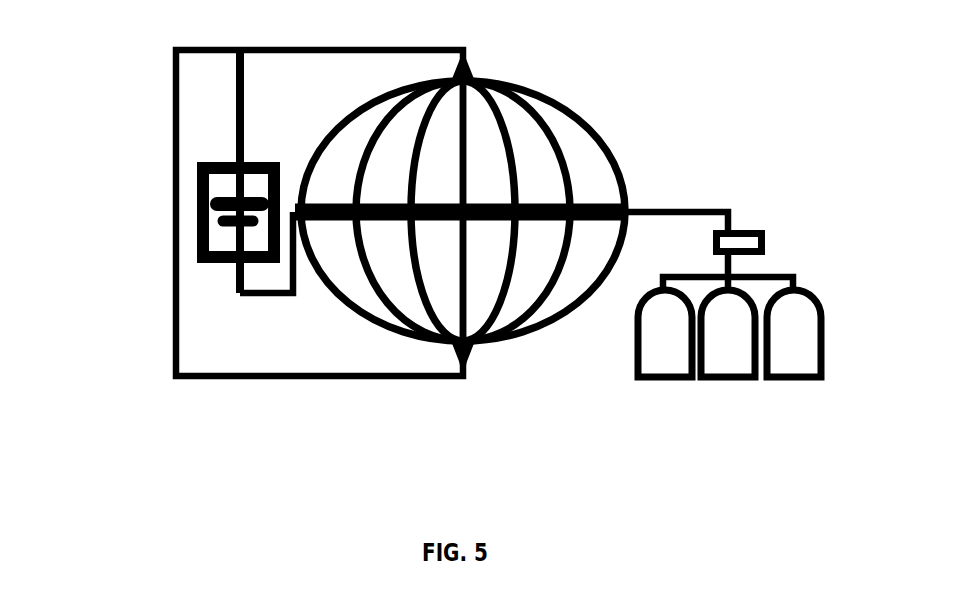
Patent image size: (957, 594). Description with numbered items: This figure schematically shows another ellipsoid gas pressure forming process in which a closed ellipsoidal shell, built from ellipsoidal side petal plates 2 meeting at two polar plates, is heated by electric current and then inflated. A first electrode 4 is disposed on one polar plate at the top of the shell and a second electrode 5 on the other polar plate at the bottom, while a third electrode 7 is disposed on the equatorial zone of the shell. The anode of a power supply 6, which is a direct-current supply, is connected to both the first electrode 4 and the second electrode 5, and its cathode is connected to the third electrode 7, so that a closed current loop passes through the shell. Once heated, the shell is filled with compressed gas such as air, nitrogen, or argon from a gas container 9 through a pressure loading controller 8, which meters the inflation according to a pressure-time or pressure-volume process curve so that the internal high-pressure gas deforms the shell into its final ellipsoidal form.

The ellipsoidal side petal plate 2 is at (496, 212).
The first electrode 4 is at (530, 49).
The second electrode 5 is at (522, 396).
The power supply 6 is at (162, 173).
The third electrode 7 is at (516, 187).
The pressure loading controller 8 is at (797, 222).
The gas container 9 is at (742, 366).